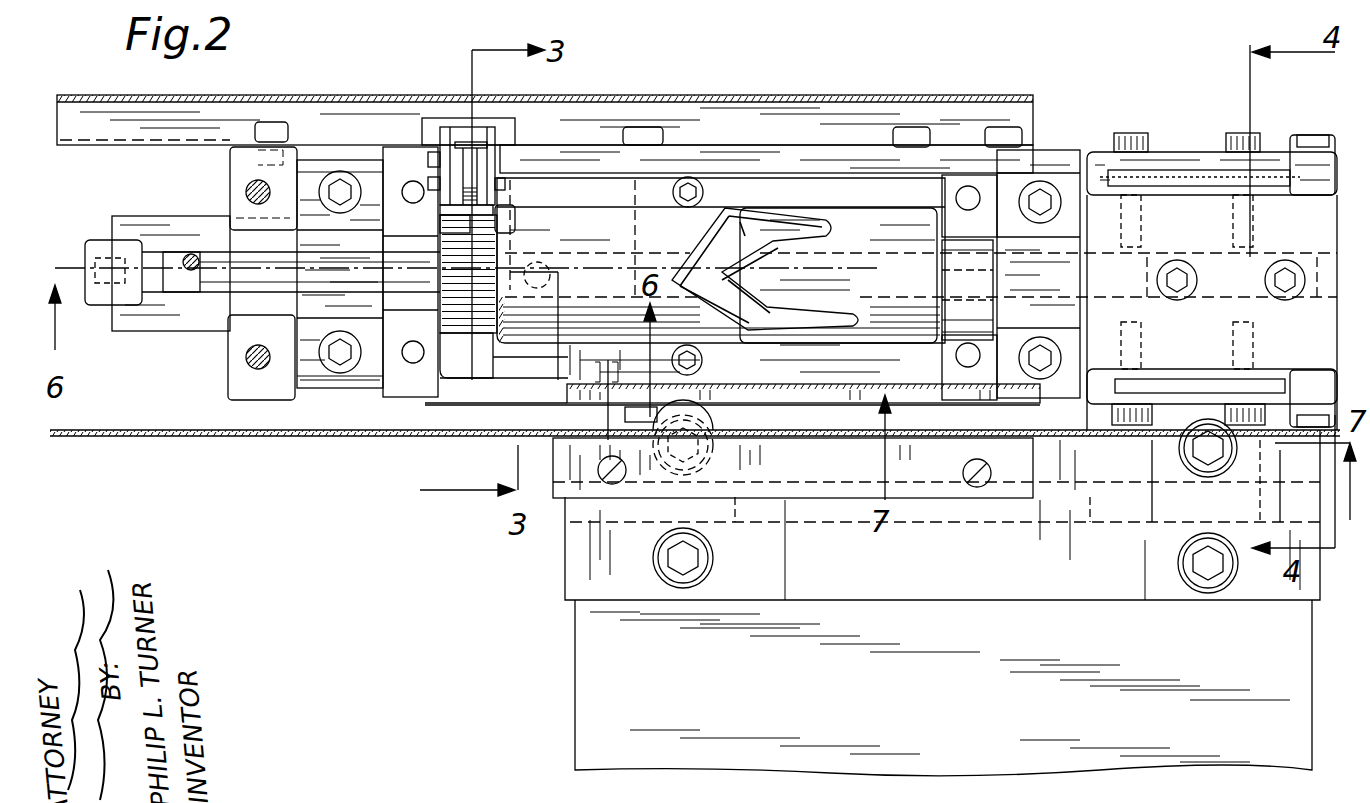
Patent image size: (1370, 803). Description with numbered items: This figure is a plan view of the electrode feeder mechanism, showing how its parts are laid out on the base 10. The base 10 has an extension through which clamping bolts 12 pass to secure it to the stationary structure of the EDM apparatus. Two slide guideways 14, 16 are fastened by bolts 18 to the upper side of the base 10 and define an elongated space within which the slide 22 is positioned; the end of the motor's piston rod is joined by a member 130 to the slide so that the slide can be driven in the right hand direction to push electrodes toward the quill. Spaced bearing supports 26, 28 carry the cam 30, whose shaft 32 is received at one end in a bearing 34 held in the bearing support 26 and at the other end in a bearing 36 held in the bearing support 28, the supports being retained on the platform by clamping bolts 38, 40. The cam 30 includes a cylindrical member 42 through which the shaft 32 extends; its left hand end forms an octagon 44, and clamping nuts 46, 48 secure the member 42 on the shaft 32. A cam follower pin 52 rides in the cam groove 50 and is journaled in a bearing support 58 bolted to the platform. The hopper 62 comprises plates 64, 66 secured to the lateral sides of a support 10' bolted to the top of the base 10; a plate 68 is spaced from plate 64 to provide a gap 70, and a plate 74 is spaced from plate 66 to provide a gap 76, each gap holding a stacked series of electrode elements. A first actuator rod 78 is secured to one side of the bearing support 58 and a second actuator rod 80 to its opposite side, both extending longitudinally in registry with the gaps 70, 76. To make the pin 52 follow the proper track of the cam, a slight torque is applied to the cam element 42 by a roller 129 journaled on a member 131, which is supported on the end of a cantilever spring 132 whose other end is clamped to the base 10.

The base 10 is at (890, 603).
The support 10' is at (1207, 251).
The clamping bolts 12 is at (683, 588).
The slide guideway 14 is at (232, 152).
The slide guideway 16 is at (238, 378).
The bolts 18 is at (247, 190).
The slide 22 is at (190, 318).
The bearing support 26 is at (310, 378).
The bearing support 28 is at (965, 410).
The cam 30 is at (565, 195).
The shaft 32 is at (180, 285).
The bearing 34 is at (318, 192).
The bearing 36 is at (1005, 210).
The clamping bolt 38 is at (342, 368).
The clamping bolt 40 is at (1060, 375).
The cylindrical member 42 is at (700, 215).
The octagon 44 is at (457, 335).
The clamping nut 46 is at (955, 240).
The clamping nut 48 is at (398, 305).
The cam groove 50 is at (765, 345).
The pin 52 is at (537, 260).
The bearing support 58 is at (493, 352).
The hopper 62 is at (1200, 150).
The plate 64 is at (1250, 415).
The plate 66 is at (1205, 172).
The plate 68 is at (1300, 395).
The gap 70 is at (1175, 395).
The plate 74 is at (1300, 160).
The gap 76 is at (1160, 182).
The first actuator rod 78 is at (875, 405).
The second actuator rod 80 is at (800, 168).
The roller 129 is at (485, 178).
The member 130 is at (100, 240).
The member 131 is at (440, 130).
The cantilever spring 132 is at (470, 155).